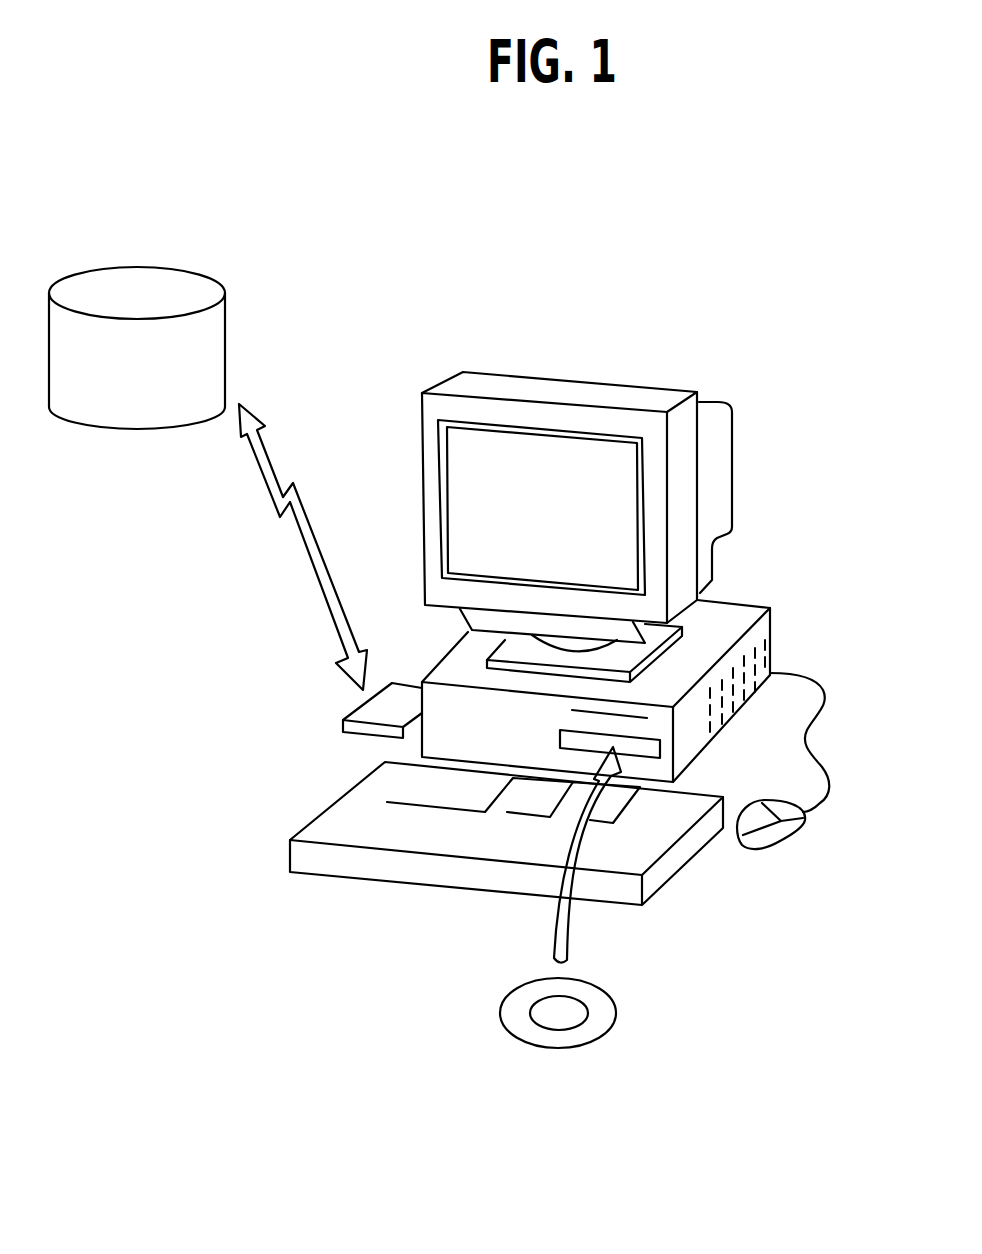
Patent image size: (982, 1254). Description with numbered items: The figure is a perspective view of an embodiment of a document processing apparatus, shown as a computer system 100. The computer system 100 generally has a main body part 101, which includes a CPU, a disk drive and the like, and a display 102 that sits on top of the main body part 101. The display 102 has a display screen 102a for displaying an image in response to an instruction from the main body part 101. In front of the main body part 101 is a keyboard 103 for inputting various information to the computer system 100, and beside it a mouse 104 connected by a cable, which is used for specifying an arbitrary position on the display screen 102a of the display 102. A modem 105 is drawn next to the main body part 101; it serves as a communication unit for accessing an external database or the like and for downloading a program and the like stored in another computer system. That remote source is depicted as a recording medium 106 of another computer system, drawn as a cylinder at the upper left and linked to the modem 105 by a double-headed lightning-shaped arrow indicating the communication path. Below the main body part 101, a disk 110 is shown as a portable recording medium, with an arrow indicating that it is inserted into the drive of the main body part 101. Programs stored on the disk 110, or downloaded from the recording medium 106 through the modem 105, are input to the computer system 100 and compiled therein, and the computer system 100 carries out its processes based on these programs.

The computer system 100 is at (715, 308).
The main body part 101 is at (758, 600).
The display 102 is at (678, 395).
The display screen 102a is at (498, 452).
The keyboard 103 is at (342, 809).
The mouse 104 is at (772, 838).
The modem 105 is at (352, 711).
The recording medium 106 is at (198, 275).
The disk 110 is at (617, 1010).